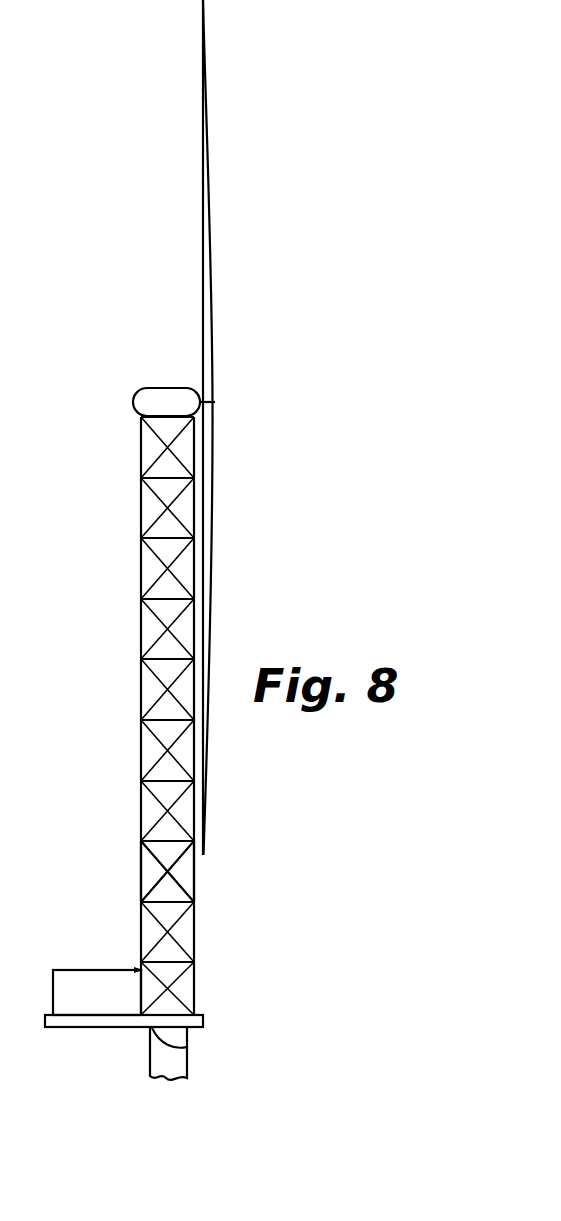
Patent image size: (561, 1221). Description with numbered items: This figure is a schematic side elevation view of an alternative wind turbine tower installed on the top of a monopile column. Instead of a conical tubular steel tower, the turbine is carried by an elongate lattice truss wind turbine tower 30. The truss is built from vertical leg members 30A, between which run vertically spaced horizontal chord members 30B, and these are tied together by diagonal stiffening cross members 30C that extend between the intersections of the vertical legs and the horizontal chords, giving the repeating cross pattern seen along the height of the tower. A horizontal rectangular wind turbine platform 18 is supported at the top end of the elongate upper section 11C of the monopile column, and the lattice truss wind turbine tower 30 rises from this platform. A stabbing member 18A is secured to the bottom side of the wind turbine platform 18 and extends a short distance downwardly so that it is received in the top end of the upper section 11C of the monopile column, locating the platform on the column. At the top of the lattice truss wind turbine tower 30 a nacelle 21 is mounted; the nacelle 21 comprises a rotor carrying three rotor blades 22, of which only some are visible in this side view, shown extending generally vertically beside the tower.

The upper section of the monopile column 11C is at (188, 1057).
The wind turbine platform 18 is at (78, 1028).
The stabbing member 18A is at (188, 1047).
The nacelle 21 is at (168, 397).
The rotor blades 22 is at (212, 283).
The lattice truss wind turbine tower 30 is at (112, 663).
The vertical leg members 30A is at (142, 873).
The horizontal chord members 30B is at (158, 838).
The diagonal stiffening cross members 30C is at (150, 858).